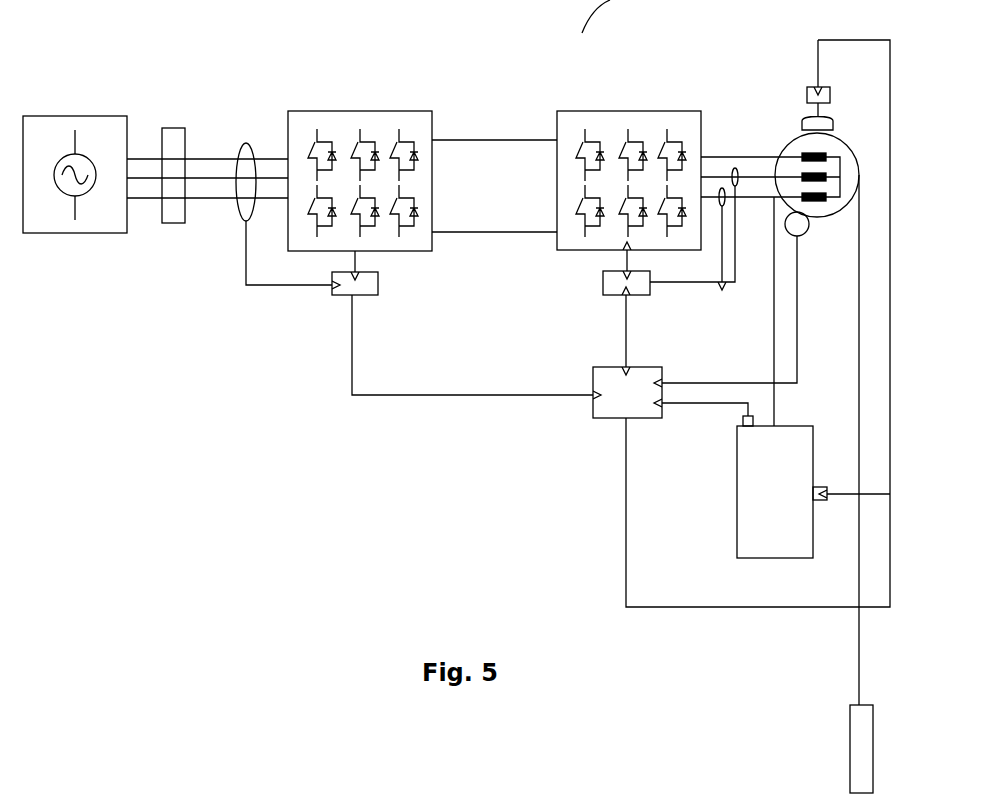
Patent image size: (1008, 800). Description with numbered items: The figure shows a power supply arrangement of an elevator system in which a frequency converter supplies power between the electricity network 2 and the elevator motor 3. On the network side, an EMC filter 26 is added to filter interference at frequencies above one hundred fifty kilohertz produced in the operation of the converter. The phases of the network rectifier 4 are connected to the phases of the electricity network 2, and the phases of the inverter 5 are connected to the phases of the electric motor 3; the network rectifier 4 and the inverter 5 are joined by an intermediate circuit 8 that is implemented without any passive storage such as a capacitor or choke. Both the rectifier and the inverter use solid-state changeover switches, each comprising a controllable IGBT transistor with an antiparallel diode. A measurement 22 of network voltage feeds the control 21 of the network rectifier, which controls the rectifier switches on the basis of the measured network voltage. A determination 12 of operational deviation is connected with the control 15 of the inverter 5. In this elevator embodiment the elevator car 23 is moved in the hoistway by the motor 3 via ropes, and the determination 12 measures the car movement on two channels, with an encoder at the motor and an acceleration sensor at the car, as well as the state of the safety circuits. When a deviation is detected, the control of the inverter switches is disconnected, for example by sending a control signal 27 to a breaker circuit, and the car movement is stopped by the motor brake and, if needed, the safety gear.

The electricity network 2 is at (67, 116).
The EMC filter 26 is at (173, 127).
The measurement of network voltage 22 is at (240, 263).
The network rectifier 4 is at (352, 111).
The intermediate circuit 8 is at (480, 140).
The inverter 5 is at (645, 111).
The control of the network rectifier 21 is at (334, 295).
The control of the inverter 15 is at (602, 282).
The electric motor 3 is at (788, 143).
The determination of operational deviation 12 is at (593, 418).
The elevator car 23 is at (735, 495).
The control signal 27 is at (377, 787).